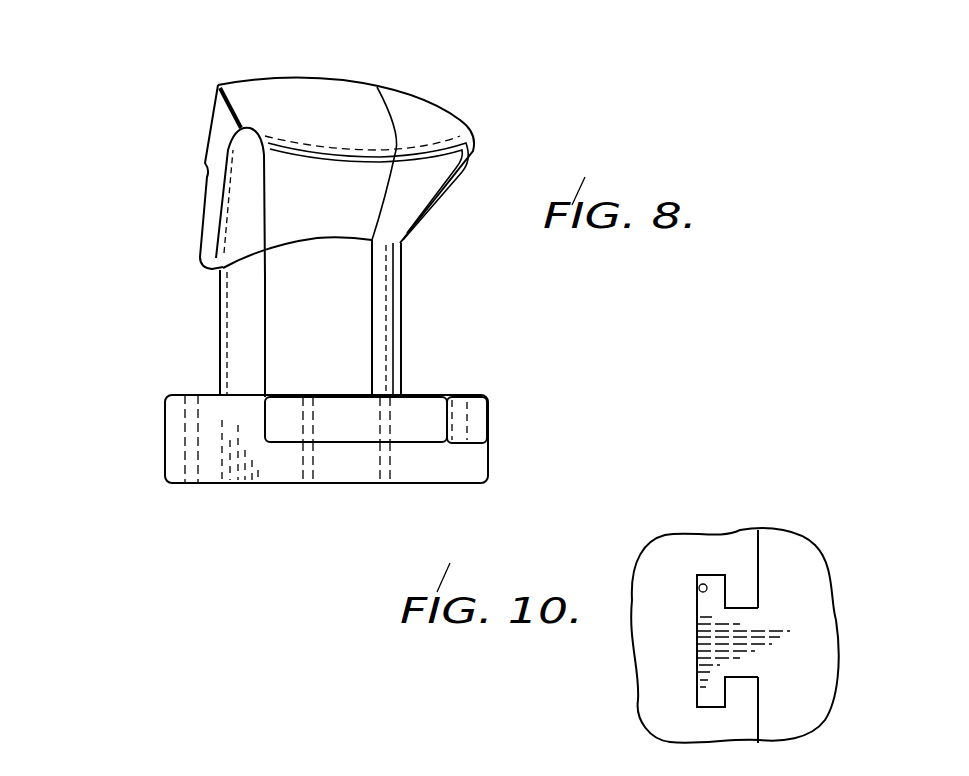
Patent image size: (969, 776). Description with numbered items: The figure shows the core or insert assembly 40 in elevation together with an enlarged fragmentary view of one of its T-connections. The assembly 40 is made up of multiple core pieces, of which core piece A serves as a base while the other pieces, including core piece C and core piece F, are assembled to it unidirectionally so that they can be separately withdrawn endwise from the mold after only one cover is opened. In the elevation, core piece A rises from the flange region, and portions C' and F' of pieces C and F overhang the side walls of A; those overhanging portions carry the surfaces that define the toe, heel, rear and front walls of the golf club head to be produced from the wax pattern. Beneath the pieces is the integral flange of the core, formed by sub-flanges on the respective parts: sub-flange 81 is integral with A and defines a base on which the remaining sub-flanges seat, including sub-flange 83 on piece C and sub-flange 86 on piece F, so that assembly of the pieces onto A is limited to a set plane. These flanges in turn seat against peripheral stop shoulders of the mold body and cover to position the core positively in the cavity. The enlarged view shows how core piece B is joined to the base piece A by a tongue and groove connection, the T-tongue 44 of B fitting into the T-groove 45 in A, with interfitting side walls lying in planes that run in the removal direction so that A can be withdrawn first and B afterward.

In FIG. 8, the core or insert assembly 40 is at (147, 222).
In FIG. 8, the sub-flange 81 is at (165, 425).
In FIG. 8, the sub-flange 83 is at (410, 402).
In FIG. 8, the sub-flange 86 is at (480, 415).
In FIG. 10, the T-groove 45 is at (700, 586).
In FIG. 10, the T-tongue 44 is at (707, 672).
In FIG. 8, the core piece A is at (220, 336).
In FIG. 10, the core piece A is at (793, 563).
In FIG. 10, the core piece B is at (642, 643).
In FIG. 8, the core piece C is at (318, 319).
In FIG. 8, the core piece F is at (430, 320).
In FIG. 8, the overhanging portion of core piece C C' is at (337, 144).
In FIG. 8, the overhanging portion of core piece F F' is at (410, 165).